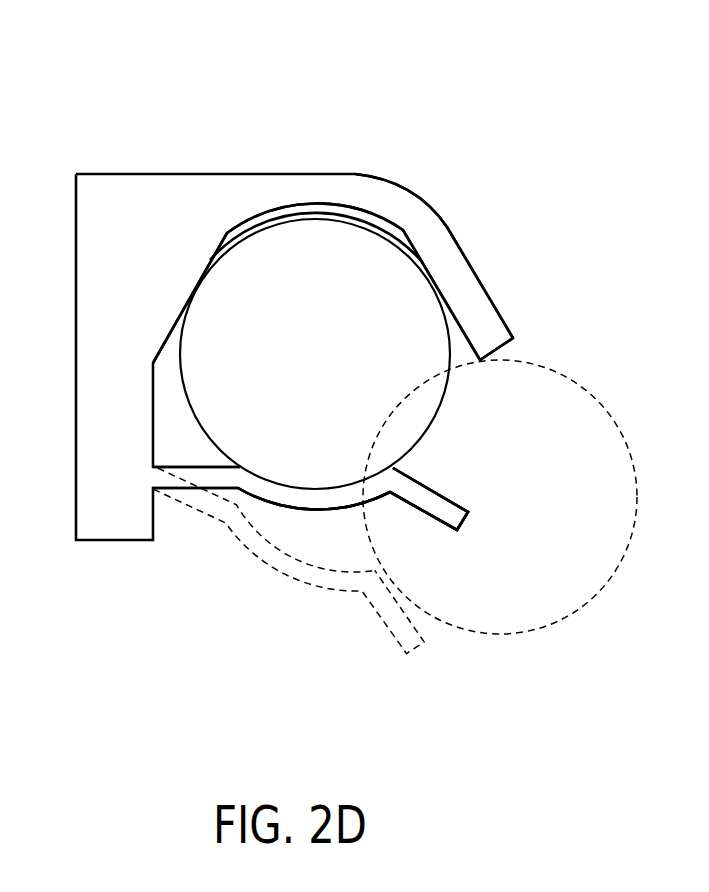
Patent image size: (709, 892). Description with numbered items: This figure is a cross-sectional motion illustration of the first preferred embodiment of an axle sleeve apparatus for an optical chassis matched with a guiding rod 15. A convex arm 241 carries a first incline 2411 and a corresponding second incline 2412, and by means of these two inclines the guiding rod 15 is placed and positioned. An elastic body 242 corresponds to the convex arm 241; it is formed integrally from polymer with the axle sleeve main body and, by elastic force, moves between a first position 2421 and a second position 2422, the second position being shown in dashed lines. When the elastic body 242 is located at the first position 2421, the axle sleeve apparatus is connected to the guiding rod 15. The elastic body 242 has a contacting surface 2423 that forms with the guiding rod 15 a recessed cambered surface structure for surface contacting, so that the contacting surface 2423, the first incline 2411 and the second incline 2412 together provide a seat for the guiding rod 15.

The guiding rod 15 is at (326, 316).
The convex arm 241 is at (447, 209).
The first incline 2411 is at (467, 333).
The second incline 2412 is at (168, 332).
The elastic body 242 is at (247, 578).
The first position 2421 is at (458, 517).
The second position 2422 is at (427, 648).
The contacting surface 2423 is at (377, 473).